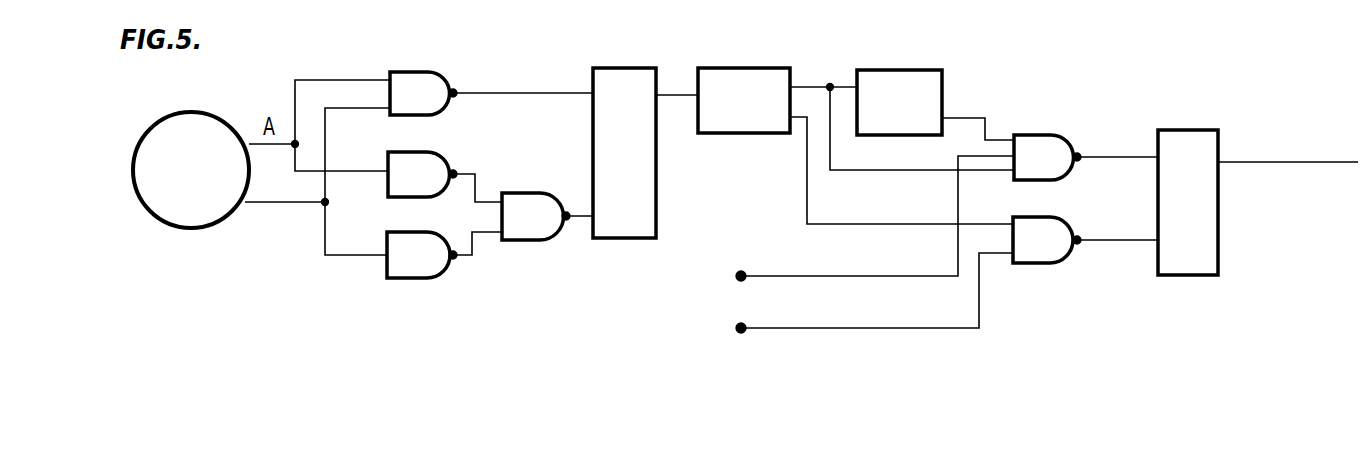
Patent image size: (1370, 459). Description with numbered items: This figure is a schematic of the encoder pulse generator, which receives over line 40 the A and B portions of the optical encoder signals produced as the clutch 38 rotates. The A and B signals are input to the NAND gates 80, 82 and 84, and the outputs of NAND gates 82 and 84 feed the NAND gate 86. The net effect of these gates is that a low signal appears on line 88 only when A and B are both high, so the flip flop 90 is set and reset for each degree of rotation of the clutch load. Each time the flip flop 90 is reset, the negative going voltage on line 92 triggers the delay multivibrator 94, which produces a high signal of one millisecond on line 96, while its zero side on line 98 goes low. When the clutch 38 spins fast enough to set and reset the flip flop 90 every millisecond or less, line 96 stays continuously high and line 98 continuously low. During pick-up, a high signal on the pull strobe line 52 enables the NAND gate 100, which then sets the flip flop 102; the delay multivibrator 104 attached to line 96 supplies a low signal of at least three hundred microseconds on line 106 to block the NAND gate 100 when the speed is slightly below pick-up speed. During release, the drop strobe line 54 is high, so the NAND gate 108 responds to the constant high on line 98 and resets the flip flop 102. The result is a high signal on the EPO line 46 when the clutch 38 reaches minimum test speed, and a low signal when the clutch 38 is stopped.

The clutch 38 is at (183, 112).
The line 40 is at (267, 213).
The EPO line 46 is at (1306, 162).
The pull strobe line 52 is at (766, 274).
The drop strobe line 54 is at (766, 327).
The NAND gate 80 is at (434, 72).
The NAND gate 82 is at (431, 152).
The NAND gate 84 is at (434, 220).
The NAND gate 86 is at (535, 193).
The line 88 is at (523, 93).
The flip flop 90 is at (629, 68).
The line 92 is at (677, 95).
The delay multivibrator 94 is at (751, 68).
The line 96 is at (800, 87).
The line 98 is at (886, 172).
The NAND gate 100 is at (1036, 135).
The flip flop 102 is at (1191, 130).
The delay multivibrator 104 is at (898, 70).
The line 106 is at (971, 118).
The NAND gate 108 is at (1063, 260).